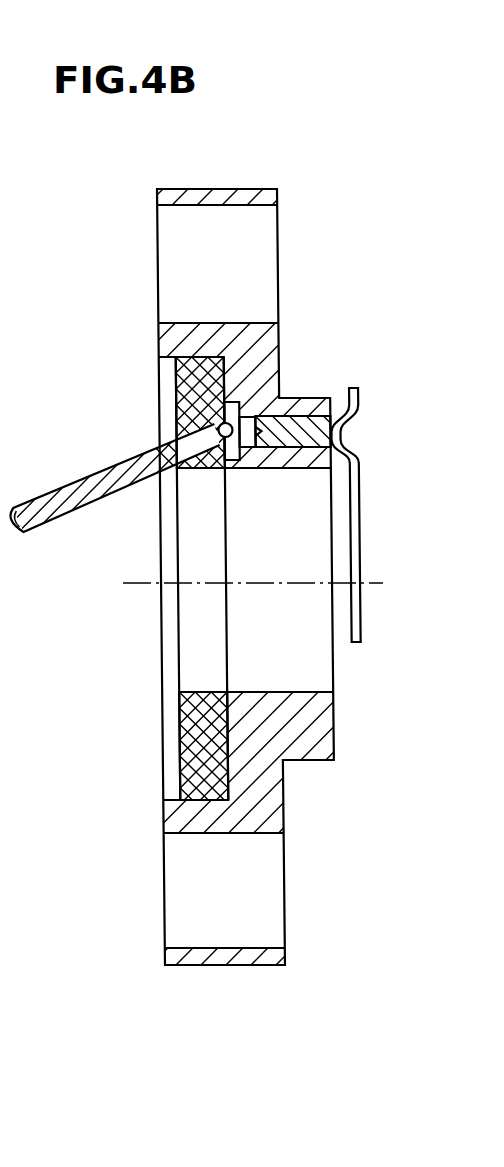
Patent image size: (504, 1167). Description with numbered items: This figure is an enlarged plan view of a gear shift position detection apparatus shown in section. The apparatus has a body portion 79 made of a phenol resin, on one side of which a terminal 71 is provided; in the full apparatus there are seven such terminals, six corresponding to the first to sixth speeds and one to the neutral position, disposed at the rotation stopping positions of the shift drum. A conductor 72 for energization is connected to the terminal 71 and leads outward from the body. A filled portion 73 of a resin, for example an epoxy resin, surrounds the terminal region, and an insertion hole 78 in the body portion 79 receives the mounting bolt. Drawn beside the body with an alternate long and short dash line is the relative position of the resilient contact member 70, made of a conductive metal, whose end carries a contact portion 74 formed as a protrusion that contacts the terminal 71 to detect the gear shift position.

The resilient contact member 70 is at (362, 486).
The terminal 71 is at (300, 425).
The conductor 72 is at (120, 477).
The filled portion of a resin 73 is at (200, 390).
The contact portion 74 is at (340, 432).
The insertion hole 78 is at (257, 233).
The body portion 79 is at (252, 352).